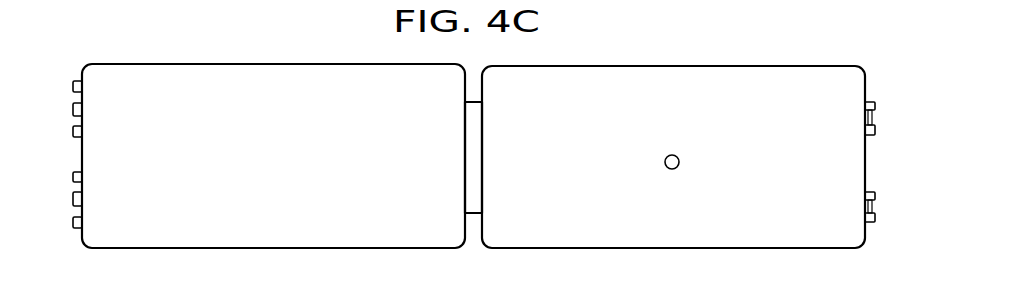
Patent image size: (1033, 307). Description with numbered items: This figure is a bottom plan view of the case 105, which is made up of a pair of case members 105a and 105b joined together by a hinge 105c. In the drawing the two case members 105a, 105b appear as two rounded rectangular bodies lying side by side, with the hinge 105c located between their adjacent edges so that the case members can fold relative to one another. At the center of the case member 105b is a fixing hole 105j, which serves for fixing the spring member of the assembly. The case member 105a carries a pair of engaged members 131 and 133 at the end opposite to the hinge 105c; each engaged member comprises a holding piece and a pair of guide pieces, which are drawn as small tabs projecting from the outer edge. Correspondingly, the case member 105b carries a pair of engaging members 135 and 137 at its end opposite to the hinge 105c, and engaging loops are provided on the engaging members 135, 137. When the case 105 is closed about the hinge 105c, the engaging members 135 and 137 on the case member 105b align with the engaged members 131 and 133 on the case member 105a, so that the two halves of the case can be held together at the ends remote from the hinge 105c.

The case 105 is at (807, 33).
The case member 105a is at (235, 248).
The case member 105b is at (740, 250).
The hinge 105c is at (477, 207).
The fixing hole 105j is at (680, 163).
The engaged member 131 is at (73, 200).
The engaged member 133 is at (73, 109).
The engaging member 135 is at (912, 203).
The engaging member 137 is at (875, 105).